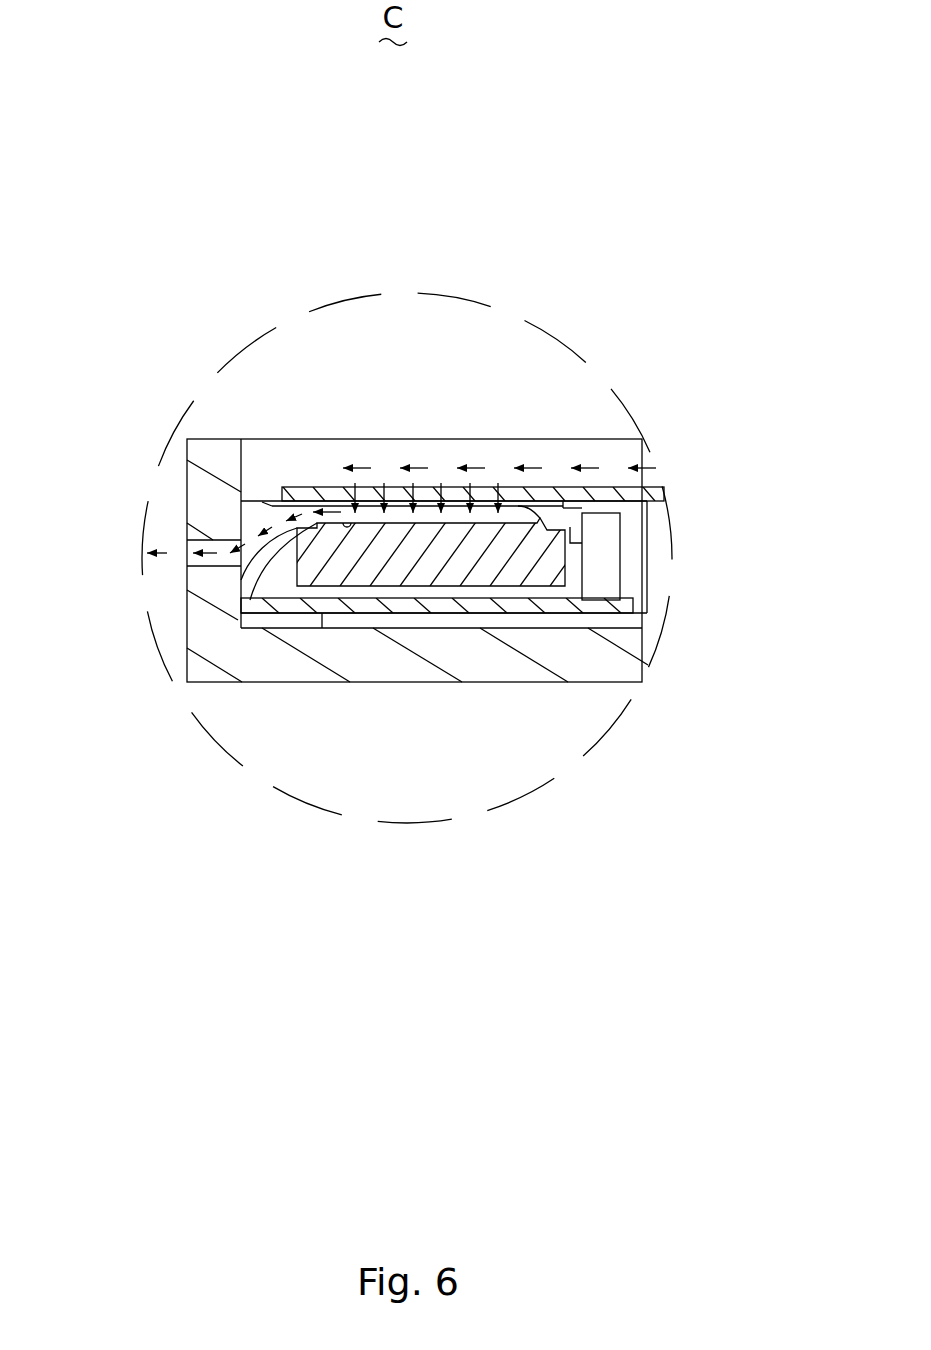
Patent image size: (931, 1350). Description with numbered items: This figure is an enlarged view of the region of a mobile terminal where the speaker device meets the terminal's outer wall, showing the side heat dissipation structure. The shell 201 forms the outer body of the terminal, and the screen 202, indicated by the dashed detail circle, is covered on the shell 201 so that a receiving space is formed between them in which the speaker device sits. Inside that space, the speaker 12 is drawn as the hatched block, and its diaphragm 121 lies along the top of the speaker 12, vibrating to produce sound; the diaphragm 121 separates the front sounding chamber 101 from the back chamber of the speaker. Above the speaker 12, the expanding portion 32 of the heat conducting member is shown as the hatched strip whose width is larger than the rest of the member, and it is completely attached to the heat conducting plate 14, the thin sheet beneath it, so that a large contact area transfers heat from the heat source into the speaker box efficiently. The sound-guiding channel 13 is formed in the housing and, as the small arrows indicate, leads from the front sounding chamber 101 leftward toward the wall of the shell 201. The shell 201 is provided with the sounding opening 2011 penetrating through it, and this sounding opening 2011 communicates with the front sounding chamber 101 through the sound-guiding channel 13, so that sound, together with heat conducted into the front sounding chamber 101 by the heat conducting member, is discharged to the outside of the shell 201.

The shell 201 is at (499, 662).
The sounding opening 2011 is at (197, 578).
The screen 202 is at (407, 439).
The expanding portion 32 is at (337, 500).
The front sounding chamber 101 is at (538, 488).
The heat conducting plate 14 is at (300, 500).
The sound-guiding channel 13 is at (232, 523).
The speaker 12 is at (487, 560).
The diaphragm 121 is at (470, 525).